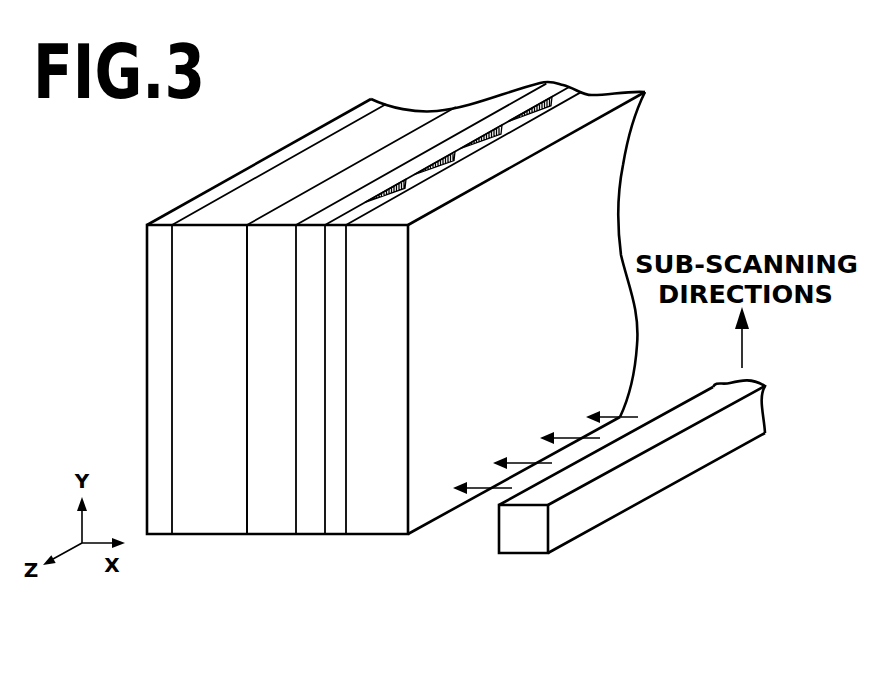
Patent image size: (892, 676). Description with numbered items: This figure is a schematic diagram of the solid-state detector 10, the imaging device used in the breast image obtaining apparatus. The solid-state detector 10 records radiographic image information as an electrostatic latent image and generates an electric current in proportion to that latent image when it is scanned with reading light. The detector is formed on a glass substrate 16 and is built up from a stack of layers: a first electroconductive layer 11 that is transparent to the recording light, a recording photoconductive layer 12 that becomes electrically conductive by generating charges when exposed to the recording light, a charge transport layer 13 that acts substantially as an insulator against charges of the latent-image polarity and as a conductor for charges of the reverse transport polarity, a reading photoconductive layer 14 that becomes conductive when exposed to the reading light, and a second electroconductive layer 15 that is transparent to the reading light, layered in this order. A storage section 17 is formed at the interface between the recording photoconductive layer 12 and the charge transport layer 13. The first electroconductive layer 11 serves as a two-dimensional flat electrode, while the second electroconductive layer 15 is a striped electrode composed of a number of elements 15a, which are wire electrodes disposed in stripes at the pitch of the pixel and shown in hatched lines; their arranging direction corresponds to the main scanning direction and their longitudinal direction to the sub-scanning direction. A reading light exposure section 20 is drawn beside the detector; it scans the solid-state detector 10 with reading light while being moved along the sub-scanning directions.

The solid-state detector 10 is at (396, 333).
The first electroconductive layer 11 is at (156, 527).
The recording photoconductive layer 12 is at (195, 527).
The charge transport layer 13 is at (268, 527).
The reading photoconductive layer 14 is at (307, 527).
The second electroconductive layer 15 is at (334, 527).
The elements 15a is at (527, 112).
The glass substrate 16 is at (375, 527).
The storage section 17 is at (244, 510).
The reading light exposure section 20 is at (522, 565).